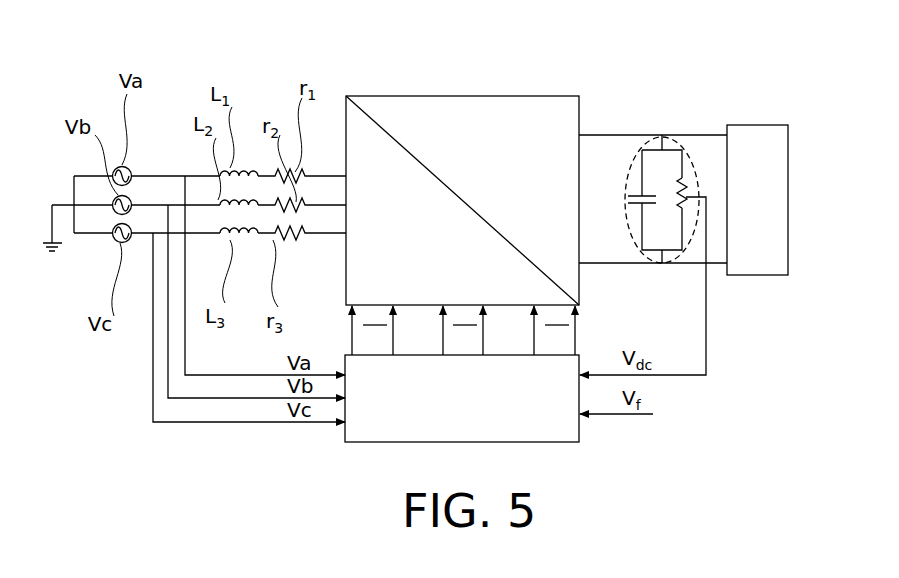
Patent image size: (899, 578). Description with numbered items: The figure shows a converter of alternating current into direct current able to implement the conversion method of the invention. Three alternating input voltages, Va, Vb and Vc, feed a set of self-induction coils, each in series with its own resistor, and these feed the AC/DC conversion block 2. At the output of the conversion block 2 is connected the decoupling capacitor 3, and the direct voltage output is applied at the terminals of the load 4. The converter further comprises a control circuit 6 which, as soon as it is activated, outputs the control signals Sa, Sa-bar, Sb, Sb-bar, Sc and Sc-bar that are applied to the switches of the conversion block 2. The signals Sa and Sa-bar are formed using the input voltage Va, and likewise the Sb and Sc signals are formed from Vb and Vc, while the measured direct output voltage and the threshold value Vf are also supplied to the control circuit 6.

The AC/DC conversion block 2 is at (481, 86).
The decoupling capacitor 3 is at (672, 142).
The load 4 is at (750, 142).
The control circuit 6 is at (368, 430).